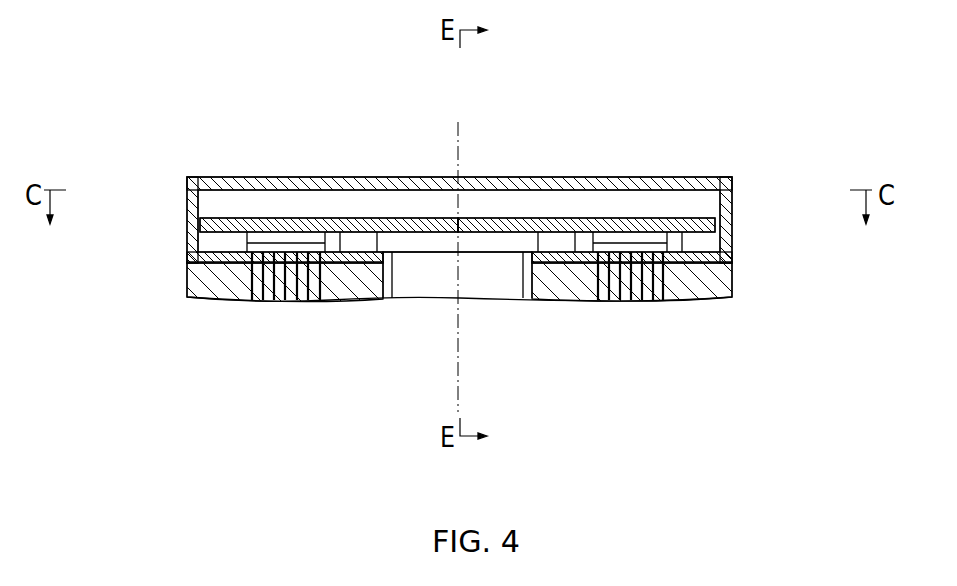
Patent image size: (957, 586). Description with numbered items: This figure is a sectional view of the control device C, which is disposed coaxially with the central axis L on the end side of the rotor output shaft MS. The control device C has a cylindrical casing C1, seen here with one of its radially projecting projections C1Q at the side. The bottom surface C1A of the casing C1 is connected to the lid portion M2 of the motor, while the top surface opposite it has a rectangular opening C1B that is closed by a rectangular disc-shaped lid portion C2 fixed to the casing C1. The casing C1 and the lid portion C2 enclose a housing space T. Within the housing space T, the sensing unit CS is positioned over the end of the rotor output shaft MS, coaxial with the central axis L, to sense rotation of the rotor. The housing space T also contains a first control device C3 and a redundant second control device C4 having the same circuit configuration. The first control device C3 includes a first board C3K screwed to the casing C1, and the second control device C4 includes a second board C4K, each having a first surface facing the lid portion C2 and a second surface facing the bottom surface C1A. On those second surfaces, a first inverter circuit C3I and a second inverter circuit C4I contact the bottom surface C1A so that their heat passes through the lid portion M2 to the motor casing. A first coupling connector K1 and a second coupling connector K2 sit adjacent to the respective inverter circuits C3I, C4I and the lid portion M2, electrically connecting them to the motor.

The control device C is at (742, 63).
The casing C1 is at (733, 228).
The bottom surface C1A is at (548, 262).
The top surface / opening C1B is at (722, 177).
The projection C1Q is at (186, 206).
The lid portion C2 is at (707, 177).
The first control device C3 is at (497, 213).
The first inverter circuit C3I is at (558, 218).
The first board C3K is at (529, 218).
The second control device C4 is at (421, 213).
The second inverter circuit C4I is at (357, 218).
The second board C4K is at (380, 218).
The housing space T is at (228, 210).
The first coupling connector K1 is at (682, 243).
The second coupling connector K2 is at (247, 240).
The central axis L is at (458, 252).
The sensing unit CS is at (428, 240).
The rotor output shaft MS is at (492, 290).
The lid portion of the motor M2 is at (680, 290).